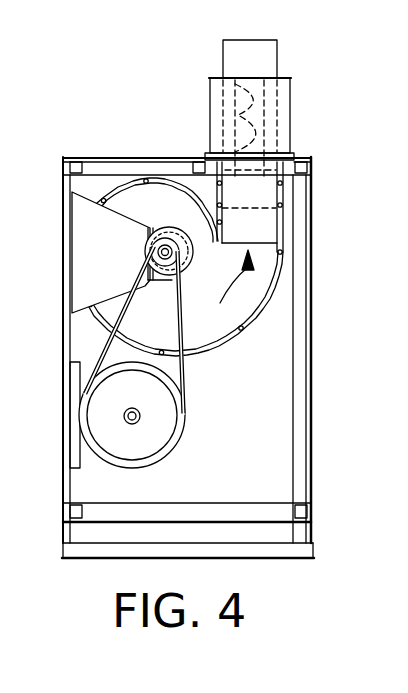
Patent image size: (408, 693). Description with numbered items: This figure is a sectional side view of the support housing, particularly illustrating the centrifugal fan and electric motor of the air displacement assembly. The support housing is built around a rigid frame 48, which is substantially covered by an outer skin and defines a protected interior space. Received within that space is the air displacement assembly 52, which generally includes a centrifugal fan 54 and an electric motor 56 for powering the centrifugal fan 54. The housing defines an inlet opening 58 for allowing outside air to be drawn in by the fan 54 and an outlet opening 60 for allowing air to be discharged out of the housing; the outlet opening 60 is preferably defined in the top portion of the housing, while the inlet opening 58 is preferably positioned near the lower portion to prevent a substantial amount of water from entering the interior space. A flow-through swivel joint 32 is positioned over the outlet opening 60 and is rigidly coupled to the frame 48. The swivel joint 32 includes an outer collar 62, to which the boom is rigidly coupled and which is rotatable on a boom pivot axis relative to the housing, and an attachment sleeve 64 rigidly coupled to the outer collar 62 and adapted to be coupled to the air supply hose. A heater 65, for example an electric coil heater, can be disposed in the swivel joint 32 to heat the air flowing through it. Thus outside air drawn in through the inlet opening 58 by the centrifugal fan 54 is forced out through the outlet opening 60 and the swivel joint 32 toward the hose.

The flow-through swivel joint 32 is at (200, 122).
The rigid frame 48 is at (180, 157).
The air displacement assembly 52 is at (266, 397).
The centrifugal fan 54 is at (233, 337).
The electric motor 56 is at (178, 447).
The inlet opening 58 is at (245, 537).
The outlet opening 60 is at (276, 194).
The outer collar 62 is at (210, 78).
The attachment sleeve 64 is at (223, 55).
The heater 65 is at (235, 110).